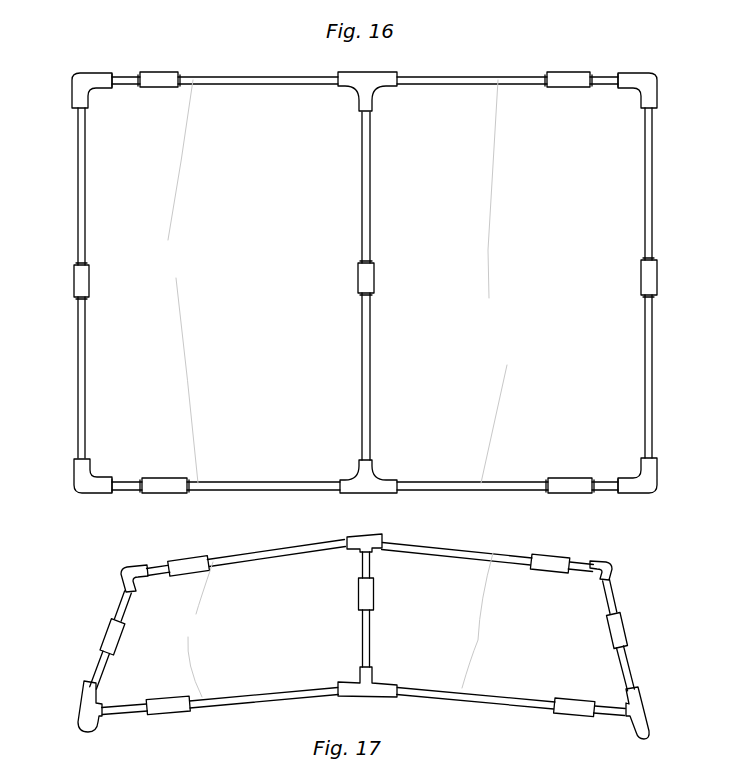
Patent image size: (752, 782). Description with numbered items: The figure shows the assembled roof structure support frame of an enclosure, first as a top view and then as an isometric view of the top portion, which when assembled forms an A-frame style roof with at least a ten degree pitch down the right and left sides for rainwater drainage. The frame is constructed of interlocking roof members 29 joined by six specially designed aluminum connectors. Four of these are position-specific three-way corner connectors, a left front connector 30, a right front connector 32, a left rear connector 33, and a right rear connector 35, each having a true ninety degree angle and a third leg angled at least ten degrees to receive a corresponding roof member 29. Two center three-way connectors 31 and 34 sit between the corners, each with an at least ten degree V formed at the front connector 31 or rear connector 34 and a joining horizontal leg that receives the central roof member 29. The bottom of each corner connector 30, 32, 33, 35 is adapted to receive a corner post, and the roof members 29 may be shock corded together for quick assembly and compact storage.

In FIG. 16, the roof member 29 is at (80, 242).
In FIG. 17, the roof member 29 is at (105, 655).
In FIG. 16, the left front corner connector 30 is at (88, 84).
In FIG. 17, the left front corner connector 30 is at (126, 570).
In FIG. 16, the center roof support three-way connector 31 is at (370, 82).
In FIG. 17, the center roof support three-way connector 31 is at (373, 524).
In FIG. 16, the right front corner connector 32 is at (640, 80).
In FIG. 17, the right front corner connector 32 is at (606, 572).
In FIG. 16, the left rear corner connector 33 is at (88, 484).
In FIG. 17, the left rear corner connector 33 is at (85, 713).
In FIG. 16, the center roof support three-way connector 34 is at (375, 483).
In FIG. 17, the center roof support three-way connector 34 is at (376, 685).
In FIG. 16, the right rear corner connector 35 is at (672, 490).
In FIG. 17, the right rear corner connector 35 is at (640, 713).